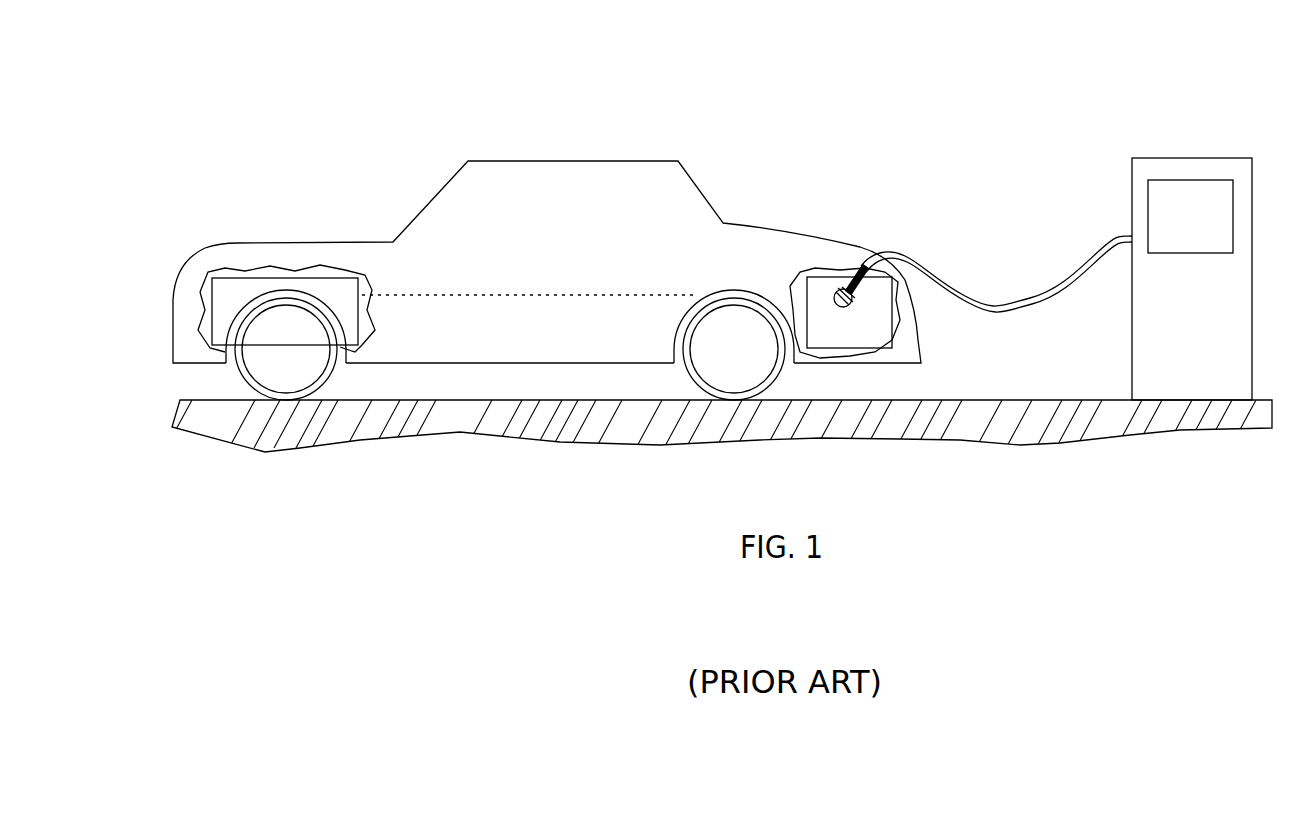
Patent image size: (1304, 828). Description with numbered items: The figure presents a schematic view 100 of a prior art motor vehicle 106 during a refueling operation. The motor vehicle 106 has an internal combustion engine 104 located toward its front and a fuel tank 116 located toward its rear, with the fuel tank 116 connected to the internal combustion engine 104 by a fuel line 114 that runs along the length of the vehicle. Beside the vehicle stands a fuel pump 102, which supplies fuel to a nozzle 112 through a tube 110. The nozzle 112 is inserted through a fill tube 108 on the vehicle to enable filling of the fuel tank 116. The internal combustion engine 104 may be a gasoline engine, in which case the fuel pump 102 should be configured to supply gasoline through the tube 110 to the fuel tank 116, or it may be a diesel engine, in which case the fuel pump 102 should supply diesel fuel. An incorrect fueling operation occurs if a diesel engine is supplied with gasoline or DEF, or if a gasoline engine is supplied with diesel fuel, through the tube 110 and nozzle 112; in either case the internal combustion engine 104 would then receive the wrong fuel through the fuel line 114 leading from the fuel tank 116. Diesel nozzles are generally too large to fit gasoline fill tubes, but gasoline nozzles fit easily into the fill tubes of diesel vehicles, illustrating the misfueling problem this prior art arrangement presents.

The view 100 is at (368, 111).
The fuel pump 102 is at (1193, 170).
The internal combustion engine 104 is at (238, 293).
The motor vehicle 106 is at (549, 180).
The fill tube 108 is at (838, 291).
The tube 110 is at (999, 302).
The nozzle 112 is at (863, 268).
The fuel line 114 is at (570, 295).
The fuel tank 116 is at (865, 335).